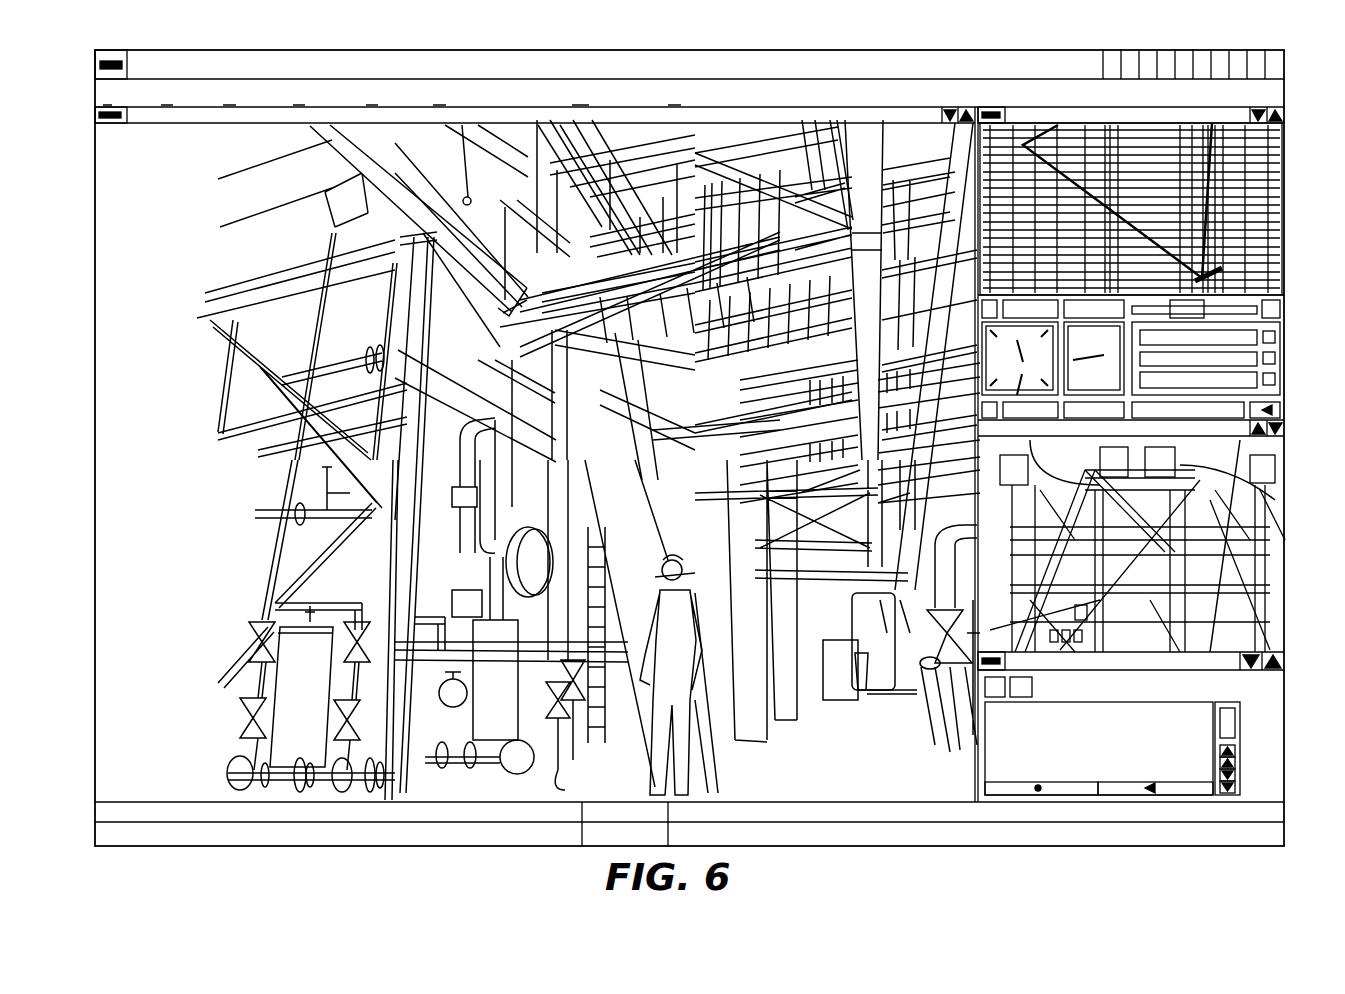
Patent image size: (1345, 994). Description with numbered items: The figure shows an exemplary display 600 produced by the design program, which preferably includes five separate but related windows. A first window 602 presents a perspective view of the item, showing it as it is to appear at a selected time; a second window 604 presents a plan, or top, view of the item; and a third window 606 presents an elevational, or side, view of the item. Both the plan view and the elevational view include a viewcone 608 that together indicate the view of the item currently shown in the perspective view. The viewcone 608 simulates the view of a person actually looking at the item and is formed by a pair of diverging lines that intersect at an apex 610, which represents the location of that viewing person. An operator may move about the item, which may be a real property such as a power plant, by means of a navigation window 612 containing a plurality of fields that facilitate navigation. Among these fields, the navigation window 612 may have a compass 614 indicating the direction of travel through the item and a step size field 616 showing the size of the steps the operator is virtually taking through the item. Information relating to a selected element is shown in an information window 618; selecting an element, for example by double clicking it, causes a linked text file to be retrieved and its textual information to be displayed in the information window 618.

The display 600 is at (222, 868).
The first window 602 is at (582, 822).
The second window 604 is at (1133, 150).
The third window 606 is at (1144, 752).
The viewcone 608 is at (1210, 148).
The apex 610 is at (1215, 270).
The navigation window 612 is at (1280, 385).
The compass 614 is at (1025, 510).
The step size field 616 is at (1274, 408).
The information window 618 is at (1028, 795).